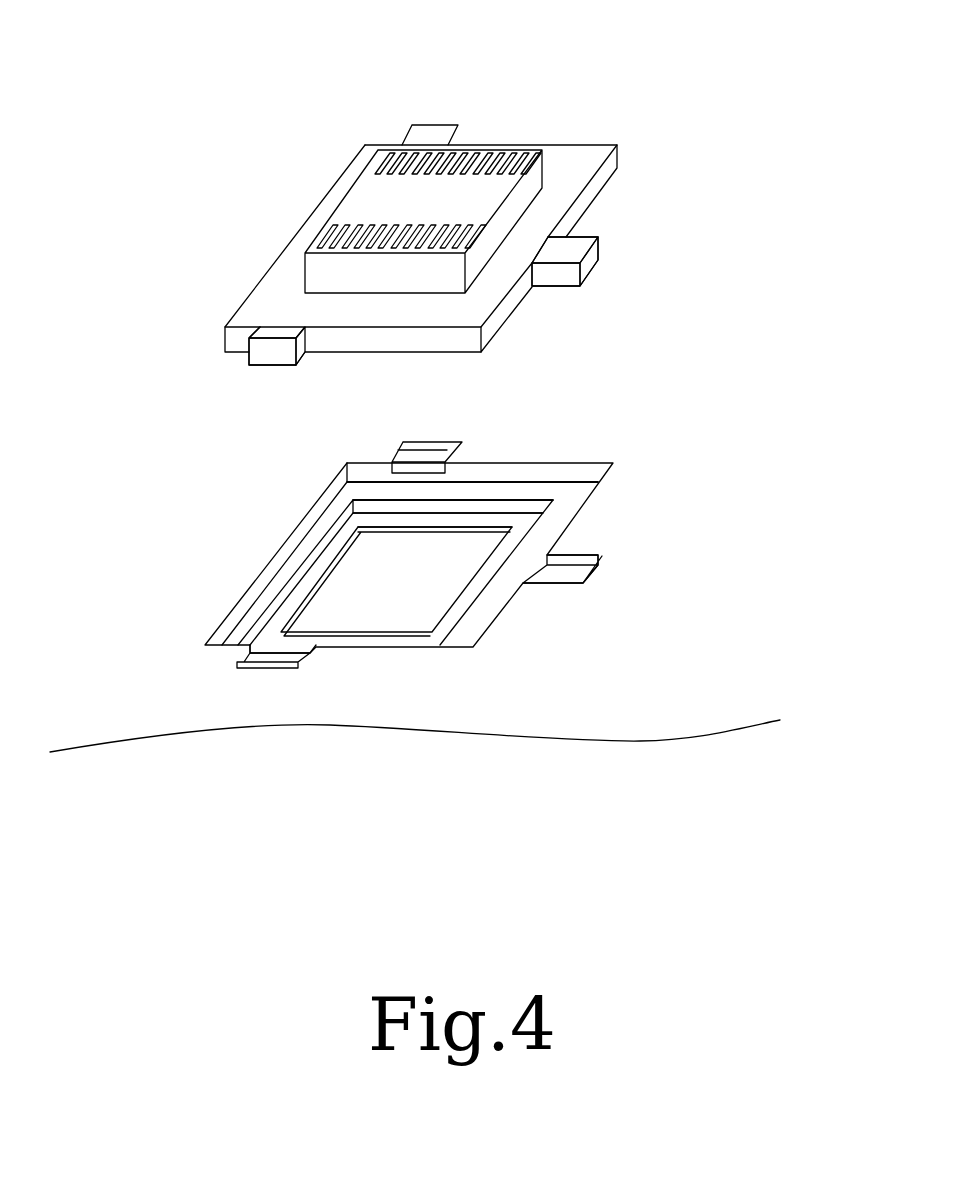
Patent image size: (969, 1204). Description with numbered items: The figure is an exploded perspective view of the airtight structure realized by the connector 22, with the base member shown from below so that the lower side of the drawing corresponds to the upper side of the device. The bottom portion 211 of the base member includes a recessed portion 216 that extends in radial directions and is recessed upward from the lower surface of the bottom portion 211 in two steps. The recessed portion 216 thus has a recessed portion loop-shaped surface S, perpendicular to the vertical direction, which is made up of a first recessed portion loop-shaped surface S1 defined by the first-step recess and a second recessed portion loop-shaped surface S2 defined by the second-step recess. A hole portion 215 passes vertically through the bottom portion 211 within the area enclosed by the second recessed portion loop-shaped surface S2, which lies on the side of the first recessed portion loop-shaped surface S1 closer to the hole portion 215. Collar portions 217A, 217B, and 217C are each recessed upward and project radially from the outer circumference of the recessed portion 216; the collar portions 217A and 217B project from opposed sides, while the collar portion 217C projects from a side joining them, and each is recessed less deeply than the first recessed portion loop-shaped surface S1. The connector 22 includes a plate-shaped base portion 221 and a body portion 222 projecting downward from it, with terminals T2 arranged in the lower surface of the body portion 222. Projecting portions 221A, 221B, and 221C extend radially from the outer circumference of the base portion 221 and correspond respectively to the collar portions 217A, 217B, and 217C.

The connector 22 is at (542, 97).
The base portion 221 is at (617, 146).
The projecting portion 221A is at (425, 125).
The projecting portion 221B is at (262, 365).
The projecting portion 221C is at (600, 245).
The body portion 222 is at (352, 190).
The terminals T2 is at (382, 152).
The recessed portion 216 is at (562, 463).
The recessed portion loop-shaped surface S is at (537, 412).
The first recessed portion loop-shaped surface S1 is at (472, 496).
The second recessed portion loop-shaped surface S2 is at (492, 520).
The hole portion 215 is at (325, 567).
The collar portion 217A is at (430, 455).
The collar portion 217B is at (275, 662).
The collar portion 217C is at (578, 564).
The bottom portion 211 is at (657, 692).